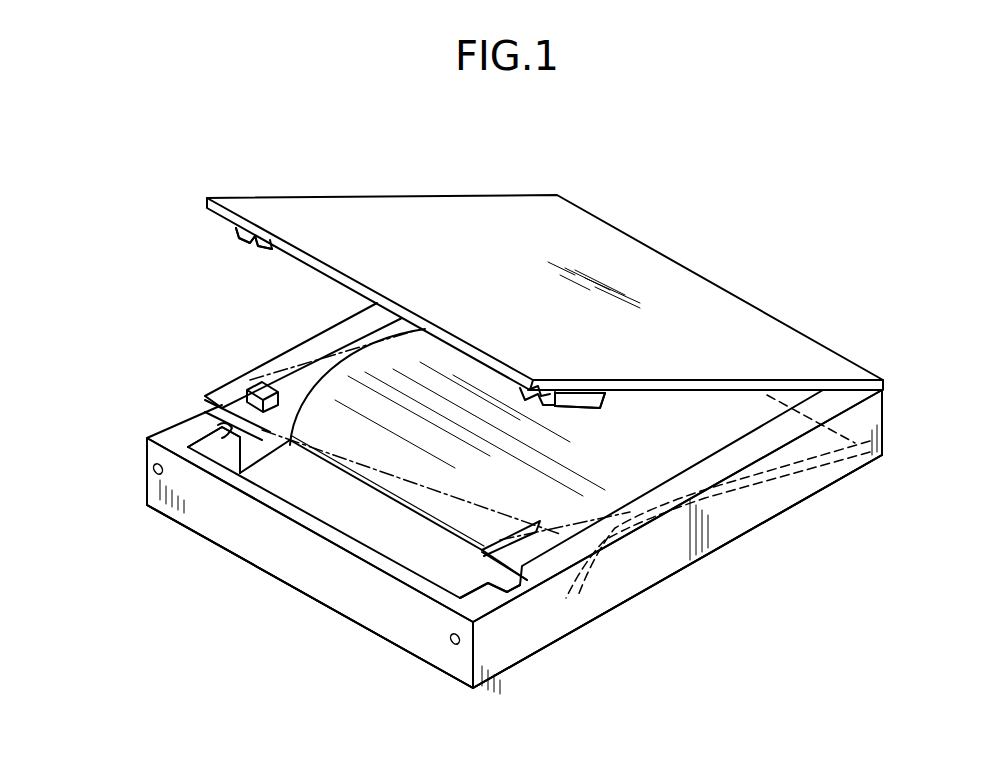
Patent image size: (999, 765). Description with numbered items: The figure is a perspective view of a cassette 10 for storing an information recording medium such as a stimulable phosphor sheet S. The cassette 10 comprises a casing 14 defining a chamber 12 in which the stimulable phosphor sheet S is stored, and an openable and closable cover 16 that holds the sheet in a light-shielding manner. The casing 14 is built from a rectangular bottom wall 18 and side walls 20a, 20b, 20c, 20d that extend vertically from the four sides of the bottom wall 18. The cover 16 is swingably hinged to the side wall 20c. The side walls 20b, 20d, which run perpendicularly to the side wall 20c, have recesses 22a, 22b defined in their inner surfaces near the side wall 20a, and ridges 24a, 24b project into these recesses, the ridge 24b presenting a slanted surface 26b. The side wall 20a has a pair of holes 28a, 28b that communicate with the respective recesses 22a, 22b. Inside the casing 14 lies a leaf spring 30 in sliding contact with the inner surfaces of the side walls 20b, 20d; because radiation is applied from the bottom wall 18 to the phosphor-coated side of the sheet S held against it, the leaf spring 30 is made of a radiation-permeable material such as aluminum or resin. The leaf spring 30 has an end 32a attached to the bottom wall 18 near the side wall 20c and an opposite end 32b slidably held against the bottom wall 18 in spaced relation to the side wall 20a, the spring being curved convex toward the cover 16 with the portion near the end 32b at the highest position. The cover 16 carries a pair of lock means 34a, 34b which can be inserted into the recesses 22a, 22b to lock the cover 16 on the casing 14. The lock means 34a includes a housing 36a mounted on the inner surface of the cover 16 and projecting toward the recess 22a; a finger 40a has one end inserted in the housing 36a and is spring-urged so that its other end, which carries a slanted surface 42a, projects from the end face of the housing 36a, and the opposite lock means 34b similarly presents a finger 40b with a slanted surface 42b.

The cassette 10 is at (720, 192).
The chamber 12 is at (380, 538).
The casing 14 is at (668, 585).
The cover 16 is at (447, 212).
The bottom wall 18 is at (413, 587).
The side wall 20a is at (252, 540).
The side wall 20b is at (748, 502).
The side wall 20c is at (885, 410).
The side wall 20d is at (330, 340).
The recess 22a is at (520, 588).
The recess 22b is at (205, 418).
The ridge 24a is at (490, 594).
The ridge 24b is at (240, 412).
The slanted surface 26b is at (232, 440).
The hole 28a is at (445, 648).
The hole 28b is at (150, 470).
The leaf spring 30 is at (375, 448).
The end 32a is at (845, 445).
The end 32b is at (322, 446).
The lock means 34a is at (600, 408).
The lock means 34b is at (262, 250).
The housing 36a is at (585, 396).
The finger 40a is at (546, 386).
The finger 40b is at (270, 235).
The slanted surface 42a is at (523, 388).
The slanted surface 42b is at (242, 236).
The stimulable phosphor sheet S is at (420, 518).